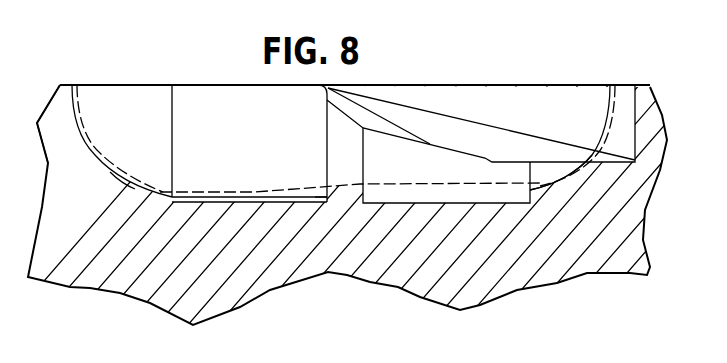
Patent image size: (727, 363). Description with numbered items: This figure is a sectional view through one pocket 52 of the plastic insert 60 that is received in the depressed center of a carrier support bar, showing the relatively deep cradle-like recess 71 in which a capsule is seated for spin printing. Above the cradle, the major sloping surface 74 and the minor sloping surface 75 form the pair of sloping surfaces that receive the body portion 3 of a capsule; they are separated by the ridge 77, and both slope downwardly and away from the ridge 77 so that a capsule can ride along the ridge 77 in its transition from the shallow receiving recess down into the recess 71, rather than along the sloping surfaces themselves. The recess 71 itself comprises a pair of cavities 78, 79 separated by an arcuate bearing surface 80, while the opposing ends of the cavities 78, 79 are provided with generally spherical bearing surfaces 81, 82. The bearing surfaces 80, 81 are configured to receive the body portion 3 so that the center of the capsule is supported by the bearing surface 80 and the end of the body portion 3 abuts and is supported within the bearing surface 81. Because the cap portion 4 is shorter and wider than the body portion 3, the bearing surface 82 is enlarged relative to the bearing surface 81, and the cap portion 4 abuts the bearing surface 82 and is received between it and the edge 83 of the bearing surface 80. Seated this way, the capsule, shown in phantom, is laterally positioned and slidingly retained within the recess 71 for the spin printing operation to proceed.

The body portion 3 is at (477, 179).
The cap portion 4 is at (260, 199).
The pocket 52 is at (155, 78).
The insert 60 is at (193, 249).
The recess 71 is at (127, 195).
The major sloping surface 74 is at (497, 135).
The minor sloping surface 75 is at (372, 123).
The ridge 77 is at (400, 136).
The cavity 78 is at (264, 159).
The cavity 79 is at (421, 169).
The arcuate bearing surface 80 is at (343, 170).
The spherical bearing surface 81 is at (575, 175).
The spherical bearing surface 82 is at (84, 150).
The edge 83 is at (321, 202).